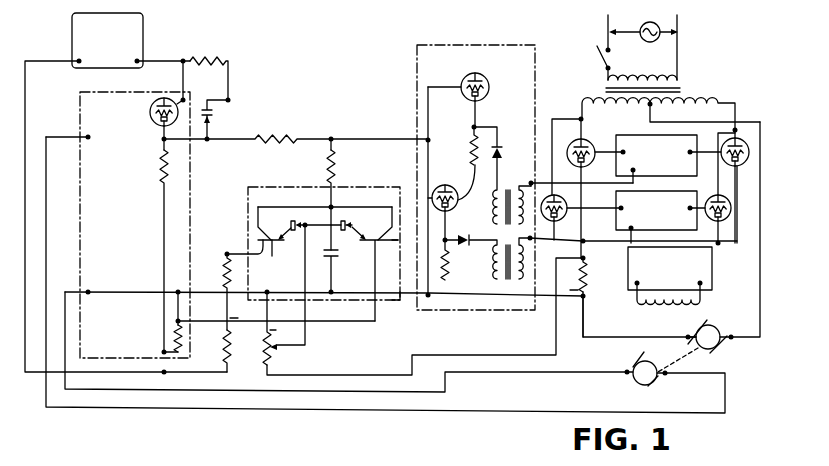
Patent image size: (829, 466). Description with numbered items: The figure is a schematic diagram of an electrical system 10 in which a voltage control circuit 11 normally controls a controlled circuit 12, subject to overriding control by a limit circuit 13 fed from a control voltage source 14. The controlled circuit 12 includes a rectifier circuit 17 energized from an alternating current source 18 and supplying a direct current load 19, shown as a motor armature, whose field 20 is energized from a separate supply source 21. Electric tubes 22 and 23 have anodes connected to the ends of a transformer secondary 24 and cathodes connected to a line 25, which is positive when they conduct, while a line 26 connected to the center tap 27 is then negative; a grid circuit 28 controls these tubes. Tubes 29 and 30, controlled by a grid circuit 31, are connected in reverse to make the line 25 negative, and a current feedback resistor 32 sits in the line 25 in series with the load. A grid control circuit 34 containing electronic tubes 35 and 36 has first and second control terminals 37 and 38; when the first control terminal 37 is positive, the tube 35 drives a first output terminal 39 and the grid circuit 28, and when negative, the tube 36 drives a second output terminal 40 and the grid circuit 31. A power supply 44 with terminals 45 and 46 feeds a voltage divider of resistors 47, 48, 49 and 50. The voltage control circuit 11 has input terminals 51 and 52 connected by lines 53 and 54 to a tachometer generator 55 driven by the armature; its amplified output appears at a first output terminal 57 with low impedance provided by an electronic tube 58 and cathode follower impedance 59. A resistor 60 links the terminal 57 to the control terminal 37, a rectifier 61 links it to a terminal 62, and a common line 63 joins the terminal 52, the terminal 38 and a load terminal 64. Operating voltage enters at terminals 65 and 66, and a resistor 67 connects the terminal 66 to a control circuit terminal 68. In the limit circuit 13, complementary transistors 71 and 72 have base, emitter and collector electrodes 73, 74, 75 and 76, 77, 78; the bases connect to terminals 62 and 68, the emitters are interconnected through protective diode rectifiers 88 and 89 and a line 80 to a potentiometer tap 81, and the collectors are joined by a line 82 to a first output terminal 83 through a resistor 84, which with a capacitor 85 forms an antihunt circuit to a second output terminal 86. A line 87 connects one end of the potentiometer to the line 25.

The electrical system 10 is at (365, 56).
The voltage control circuit 11 is at (80, 112).
The controlled circuit 12 is at (537, 75).
The limit circuit 13 is at (275, 188).
The control voltage source 14 is at (265, 340).
The rectifier circuit 17 is at (762, 101).
The alternating current source 18 is at (644, 28).
The direct current load 19 is at (718, 326).
The field 20 is at (678, 310).
The separate supply source 21 is at (713, 278).
The electric tube 22 is at (594, 143).
The electric tube 23 is at (746, 145).
The transformer secondary 24 is at (690, 100).
The line 25 is at (586, 263).
The line 26 is at (759, 275).
The center tap 27 is at (654, 110).
The grid circuit 28 is at (645, 135).
The tube 29 is at (581, 217).
The tube 30 is at (722, 196).
The grid circuit 31 is at (616, 228).
The current feedback resistor 32 is at (586, 295).
The grid control circuit 34 is at (536, 105).
The electronic tube 35 is at (490, 78).
The electronic tube 36 is at (457, 183).
The first control terminal 37 is at (429, 139).
The second control terminal 38 is at (432, 294).
The first output terminal 39 is at (530, 181).
The second output terminal 40 is at (532, 240).
The power supply 44 is at (143, 37).
The terminal 45 is at (140, 60).
The terminal 46 is at (78, 63).
The resistor 47 is at (203, 60).
The resistor 48 is at (224, 270).
The resistor 49 is at (237, 319).
The resistor 50 is at (225, 338).
The first input terminal 51 is at (89, 136).
The second input terminal 52 is at (103, 305).
The line 53 is at (385, 391).
The line 54 is at (447, 412).
The tachometer generator 55 is at (636, 382).
The first output terminal 57 is at (166, 142).
The electronic tube 58 is at (152, 116).
The cathode follower impedance 59 is at (167, 183).
The resistor 60 is at (260, 137).
The rectifier 61 is at (210, 117).
The terminal 62 is at (226, 253).
The common line 63 is at (401, 301).
The terminal 64 is at (581, 298).
The terminal 65 is at (185, 98).
The terminal 66 is at (161, 352).
The resistor 67 is at (182, 335).
The control circuit terminal 68 is at (181, 314).
The first transistor 71 is at (275, 257).
The second transistor 72 is at (367, 242).
The base electrode 73 is at (262, 244).
The emitter electrode 74 is at (275, 245).
The collector electrode 75 is at (262, 235).
The base electrode 76 is at (377, 245).
The emitter electrode 77 is at (372, 235).
The collector electrode 78 is at (393, 236).
The line 80 is at (332, 258).
The potentiometer tap 81 is at (283, 349).
The line 82 is at (285, 208).
The first output terminal 83 is at (333, 137).
The resistor 84 is at (334, 175).
The capacitor 85 is at (323, 251).
The second output terminal 86 is at (333, 294).
The line 87 is at (350, 374).
The protective diode rectifier 88 is at (296, 220).
The protective diode rectifier 89 is at (347, 220).